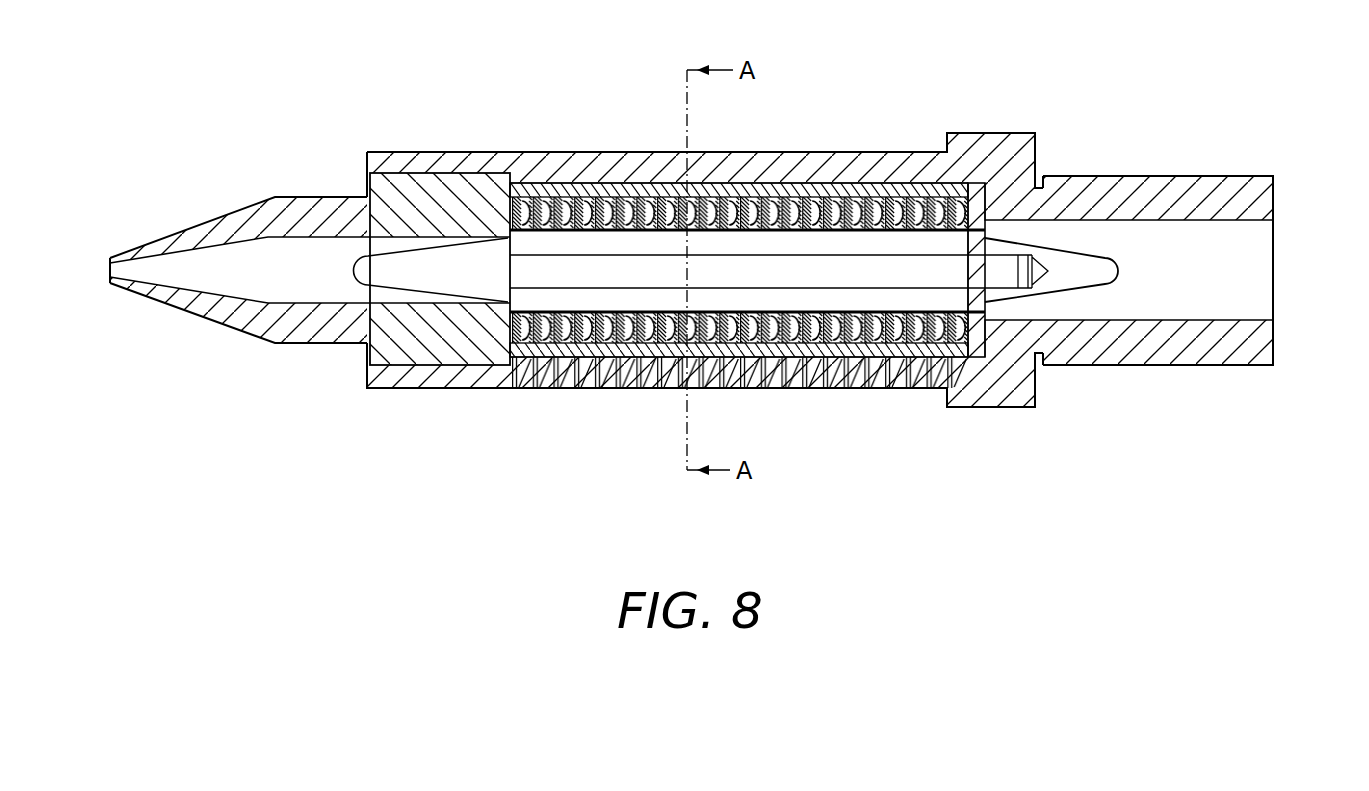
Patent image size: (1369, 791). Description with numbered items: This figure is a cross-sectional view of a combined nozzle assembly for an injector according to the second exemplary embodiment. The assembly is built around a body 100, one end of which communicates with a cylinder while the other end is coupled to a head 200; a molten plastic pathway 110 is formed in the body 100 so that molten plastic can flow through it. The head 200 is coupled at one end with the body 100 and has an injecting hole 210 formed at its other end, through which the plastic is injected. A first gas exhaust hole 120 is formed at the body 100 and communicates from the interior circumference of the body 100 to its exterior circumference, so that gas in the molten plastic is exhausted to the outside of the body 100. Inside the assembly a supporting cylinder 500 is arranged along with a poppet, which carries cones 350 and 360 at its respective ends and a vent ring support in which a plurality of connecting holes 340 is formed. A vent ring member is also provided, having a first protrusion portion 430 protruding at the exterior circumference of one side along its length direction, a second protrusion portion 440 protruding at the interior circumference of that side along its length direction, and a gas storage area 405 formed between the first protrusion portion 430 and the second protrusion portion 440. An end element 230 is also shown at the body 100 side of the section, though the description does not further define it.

The body 100 is at (1012, 395).
The molten plastic pathway 110 is at (1262, 250).
The first gas exhaust hole 120 is at (815, 365).
The head 200 is at (219, 231).
The injecting hole 210 is at (127, 270).
The end cap 230 is at (970, 192).
The connecting holes 340 is at (946, 197).
The cone 350 is at (467, 248).
The cone 360 is at (1058, 253).
The gas storage area 405 is at (550, 365).
The first protrusion portion 430 is at (527, 357).
The second protrusion portion 440 is at (508, 322).
The supporting cylinder 500 is at (805, 193).